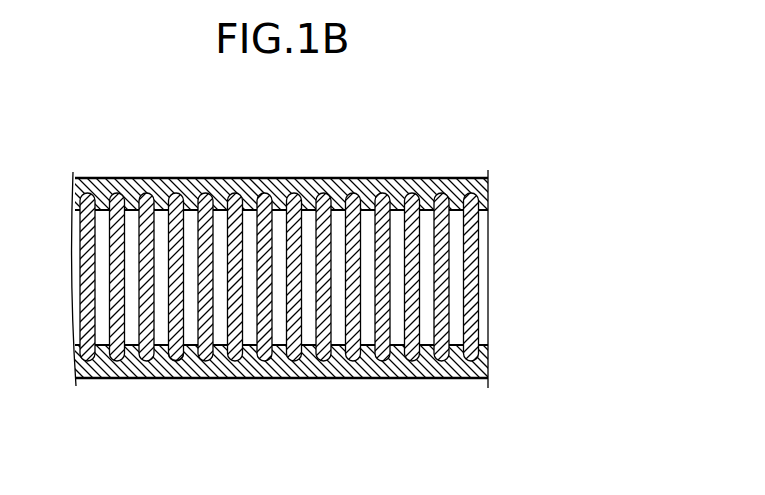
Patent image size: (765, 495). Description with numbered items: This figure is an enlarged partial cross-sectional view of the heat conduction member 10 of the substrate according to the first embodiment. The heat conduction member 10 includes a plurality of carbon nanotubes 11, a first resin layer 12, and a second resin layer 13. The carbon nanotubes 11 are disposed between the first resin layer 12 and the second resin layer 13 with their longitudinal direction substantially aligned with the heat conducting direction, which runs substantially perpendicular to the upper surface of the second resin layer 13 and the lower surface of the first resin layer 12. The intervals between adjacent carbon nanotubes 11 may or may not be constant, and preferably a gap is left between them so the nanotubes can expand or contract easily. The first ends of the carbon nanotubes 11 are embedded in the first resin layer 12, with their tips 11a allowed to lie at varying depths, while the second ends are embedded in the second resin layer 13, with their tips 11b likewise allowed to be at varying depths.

The heat conduction member 10 is at (331, 283).
The carbon nanotubes 11 is at (331, 283).
The tips of the carbon nanotubes at the first ends 11a is at (178, 362).
The tips of the carbon nanotubes at the second ends 11b is at (174, 191).
The first resin layer 12 is at (488, 372).
The second resin layer 13 is at (488, 188).